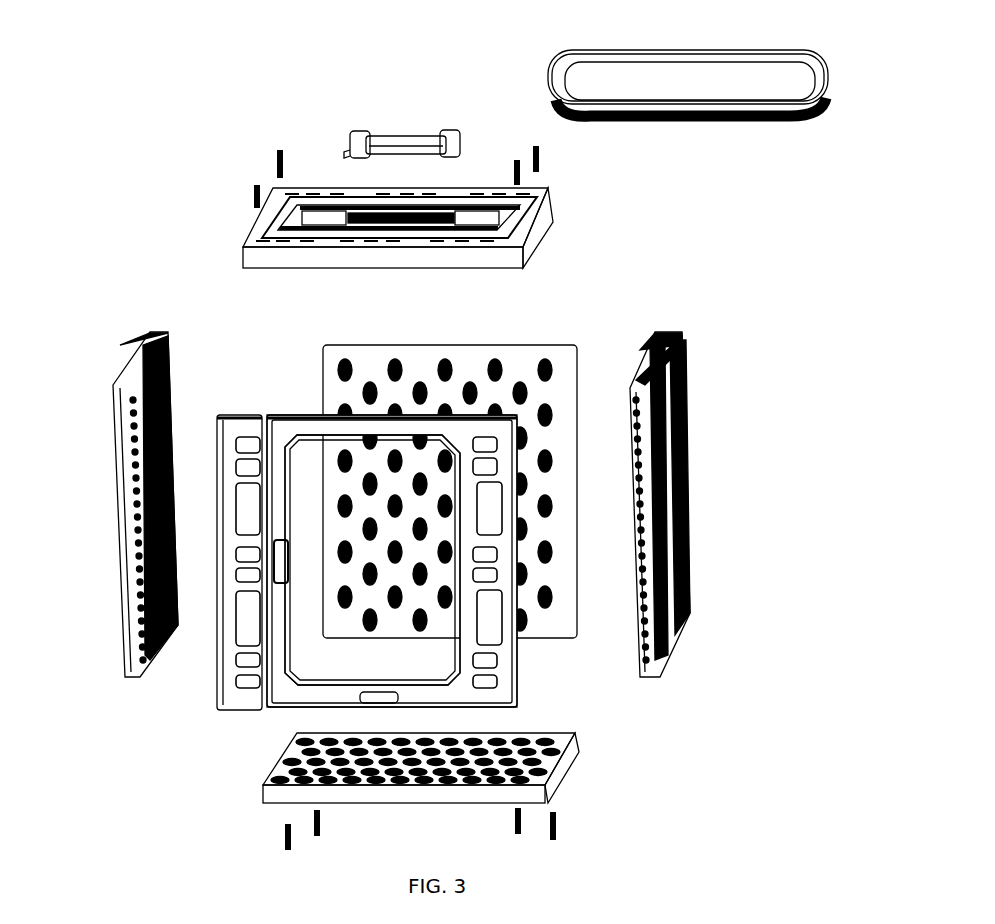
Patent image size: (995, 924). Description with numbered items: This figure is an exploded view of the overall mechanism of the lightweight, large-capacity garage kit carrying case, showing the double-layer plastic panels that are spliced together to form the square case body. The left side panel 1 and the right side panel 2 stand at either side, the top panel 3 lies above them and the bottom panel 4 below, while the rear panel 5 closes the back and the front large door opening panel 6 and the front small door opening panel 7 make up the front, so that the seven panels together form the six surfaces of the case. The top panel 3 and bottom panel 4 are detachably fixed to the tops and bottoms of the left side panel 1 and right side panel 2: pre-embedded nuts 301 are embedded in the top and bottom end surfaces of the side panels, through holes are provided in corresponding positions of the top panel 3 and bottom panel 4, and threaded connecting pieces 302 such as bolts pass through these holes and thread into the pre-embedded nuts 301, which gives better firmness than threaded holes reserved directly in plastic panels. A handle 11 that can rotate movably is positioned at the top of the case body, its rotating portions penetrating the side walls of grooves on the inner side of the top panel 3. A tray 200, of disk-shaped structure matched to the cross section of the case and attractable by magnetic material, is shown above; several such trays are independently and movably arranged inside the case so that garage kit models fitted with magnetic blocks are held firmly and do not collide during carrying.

The left side panel 1 is at (128, 652).
The right side panel 2 is at (652, 677).
The top panel 3 is at (243, 246).
The bottom panel 4 is at (565, 770).
The rear panel 5 is at (372, 368).
The front large door opening panel 6 is at (240, 672).
The front small door opening panel 7 is at (303, 427).
The handle 11 is at (388, 130).
The tray 200 is at (712, 120).
The pre-embedded nuts 301 is at (150, 333).
The threaded connecting pieces 302 is at (268, 160).